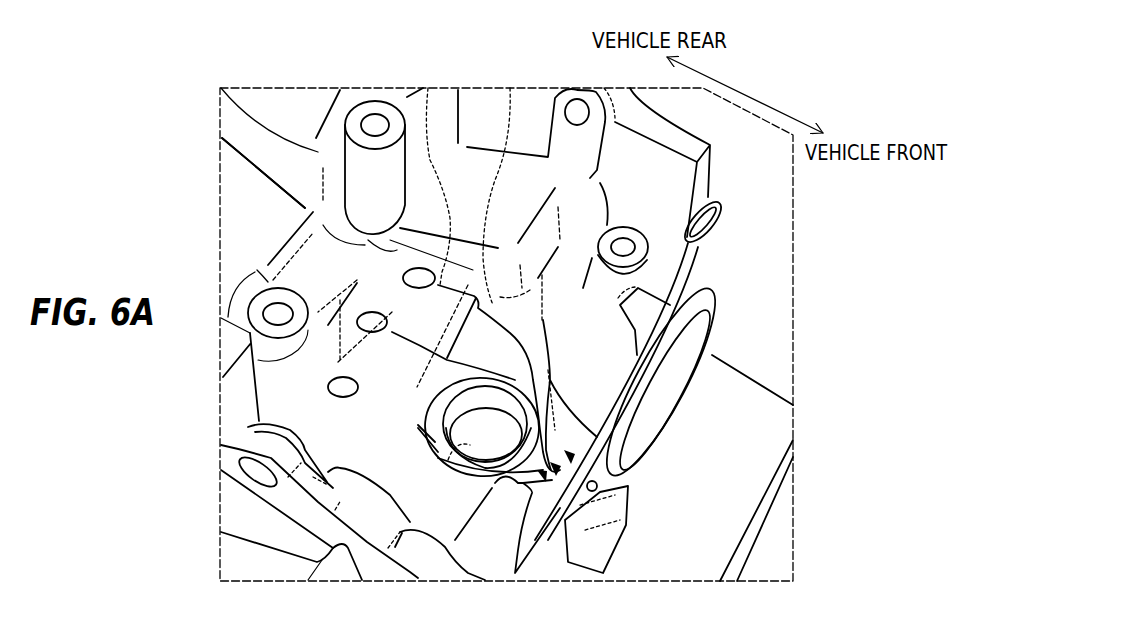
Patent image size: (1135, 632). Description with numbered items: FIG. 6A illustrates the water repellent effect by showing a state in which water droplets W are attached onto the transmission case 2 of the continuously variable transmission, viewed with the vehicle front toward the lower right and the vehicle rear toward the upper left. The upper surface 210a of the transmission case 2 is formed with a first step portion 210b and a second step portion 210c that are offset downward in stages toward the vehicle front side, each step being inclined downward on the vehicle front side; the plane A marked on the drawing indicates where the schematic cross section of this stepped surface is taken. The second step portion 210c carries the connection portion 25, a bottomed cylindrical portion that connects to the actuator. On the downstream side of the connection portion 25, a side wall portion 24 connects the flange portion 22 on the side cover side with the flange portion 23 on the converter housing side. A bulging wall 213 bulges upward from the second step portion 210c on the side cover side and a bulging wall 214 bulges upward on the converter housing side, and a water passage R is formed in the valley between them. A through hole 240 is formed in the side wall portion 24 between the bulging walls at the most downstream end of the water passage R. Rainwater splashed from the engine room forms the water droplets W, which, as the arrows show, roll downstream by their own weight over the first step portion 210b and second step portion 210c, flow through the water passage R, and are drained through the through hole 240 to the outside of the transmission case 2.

The transmission case 2 is at (752, 72).
The flange portion 22 is at (688, 142).
The flange portion 23 is at (345, 550).
The side wall portion 24 is at (592, 510).
The connection portion 25 is at (430, 445).
The bulging wall 213 is at (600, 314).
The bulging wall 214 is at (512, 470).
The through hole 240 is at (597, 492).
The upper surface 210a is at (258, 209).
The first step portion 210b is at (428, 88).
The second step portion 210c is at (510, 88).
The plane A is at (371, 281).
The water droplets W is at (347, 423).
The water passage R is at (578, 470).